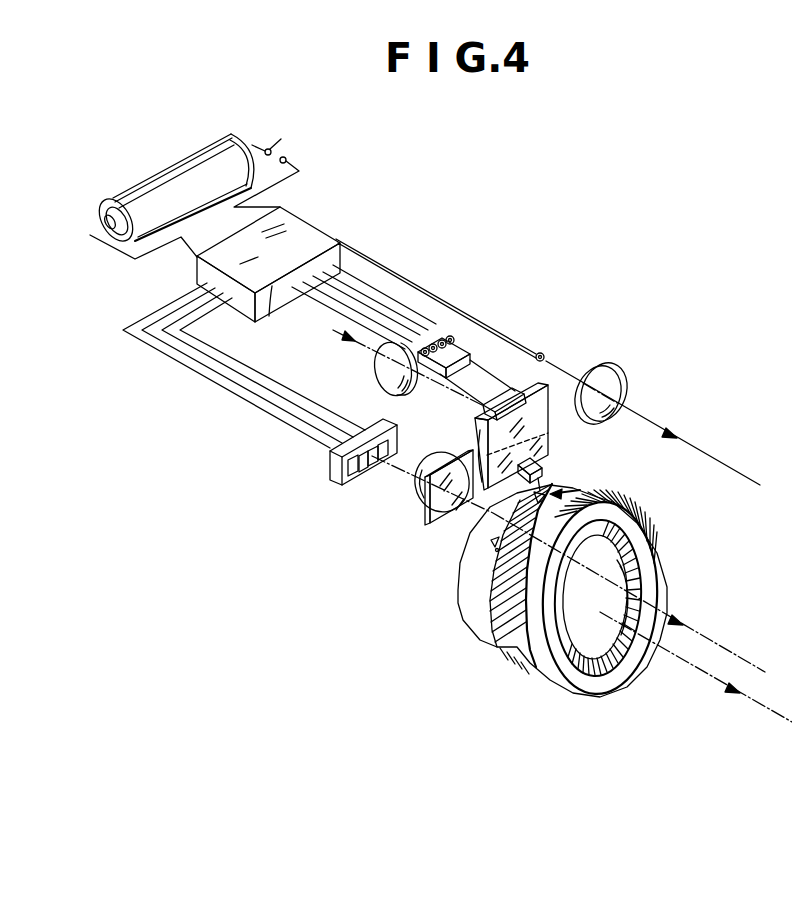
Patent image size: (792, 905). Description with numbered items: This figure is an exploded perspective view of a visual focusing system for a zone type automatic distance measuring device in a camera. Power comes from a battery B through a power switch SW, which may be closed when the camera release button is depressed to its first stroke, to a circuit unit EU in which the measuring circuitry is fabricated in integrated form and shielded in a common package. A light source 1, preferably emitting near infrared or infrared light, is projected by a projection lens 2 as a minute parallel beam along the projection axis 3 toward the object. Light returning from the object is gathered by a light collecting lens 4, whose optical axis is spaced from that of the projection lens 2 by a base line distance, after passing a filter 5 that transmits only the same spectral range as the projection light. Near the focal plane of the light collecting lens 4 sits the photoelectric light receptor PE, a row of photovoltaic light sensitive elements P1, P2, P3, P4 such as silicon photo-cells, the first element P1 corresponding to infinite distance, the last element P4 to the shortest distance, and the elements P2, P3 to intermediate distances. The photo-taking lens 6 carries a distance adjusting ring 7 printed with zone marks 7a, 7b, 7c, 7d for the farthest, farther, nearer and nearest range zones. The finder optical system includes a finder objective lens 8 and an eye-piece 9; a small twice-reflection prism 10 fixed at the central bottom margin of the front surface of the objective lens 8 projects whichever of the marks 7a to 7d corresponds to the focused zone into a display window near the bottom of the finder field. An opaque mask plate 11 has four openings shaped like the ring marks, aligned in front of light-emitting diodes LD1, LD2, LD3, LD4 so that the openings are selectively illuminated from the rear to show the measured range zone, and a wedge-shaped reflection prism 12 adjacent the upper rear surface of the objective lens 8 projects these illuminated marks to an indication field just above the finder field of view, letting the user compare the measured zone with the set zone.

The battery B is at (173, 176).
The power switch SW is at (281, 140).
The circuit unit EU is at (300, 228).
The light source 1 is at (545, 355).
The projection lens 2 is at (627, 378).
The optical axis 3 is at (717, 457).
The light collecting lens 4 is at (417, 500).
The filter 5 is at (432, 518).
The photo-taking lens 6 is at (598, 648).
The distance adjusting ring 7 is at (509, 670).
The zone mark 7a is at (587, 488).
The zone mark 7b is at (506, 513).
The zone mark 7c is at (493, 536).
The zone mark 7d is at (489, 558).
The finder objective lens 8 is at (543, 427).
The eye-piece 9 is at (372, 380).
The twice-reflection prism 10 is at (546, 469).
The mask plate 11 is at (466, 371).
The reflection prism 12 is at (493, 402).
The light-emitting diode LD1 is at (421, 348).
The light-emitting diode LD2 is at (432, 346).
The light-emitting diode LD3 is at (441, 342).
The light-emitting diode LD4 is at (449, 338).
The photoelectric light receptor PE is at (330, 470).
The photosensitive element P1 is at (382, 452).
The photosensitive element P2 is at (372, 460).
The photosensitive element P3 is at (363, 470).
The photosensitive element P4 is at (353, 475).